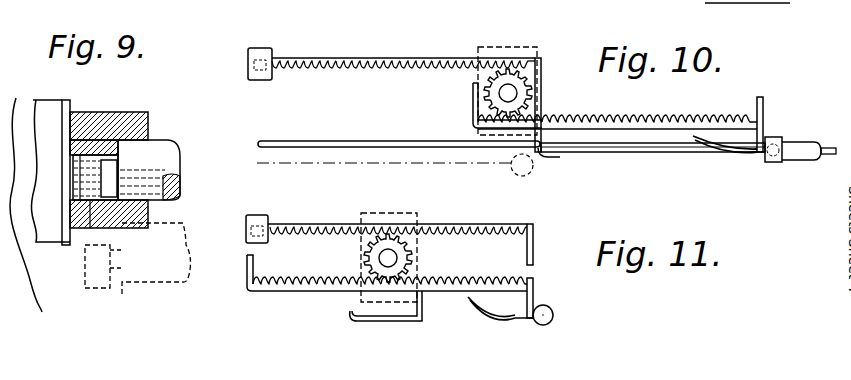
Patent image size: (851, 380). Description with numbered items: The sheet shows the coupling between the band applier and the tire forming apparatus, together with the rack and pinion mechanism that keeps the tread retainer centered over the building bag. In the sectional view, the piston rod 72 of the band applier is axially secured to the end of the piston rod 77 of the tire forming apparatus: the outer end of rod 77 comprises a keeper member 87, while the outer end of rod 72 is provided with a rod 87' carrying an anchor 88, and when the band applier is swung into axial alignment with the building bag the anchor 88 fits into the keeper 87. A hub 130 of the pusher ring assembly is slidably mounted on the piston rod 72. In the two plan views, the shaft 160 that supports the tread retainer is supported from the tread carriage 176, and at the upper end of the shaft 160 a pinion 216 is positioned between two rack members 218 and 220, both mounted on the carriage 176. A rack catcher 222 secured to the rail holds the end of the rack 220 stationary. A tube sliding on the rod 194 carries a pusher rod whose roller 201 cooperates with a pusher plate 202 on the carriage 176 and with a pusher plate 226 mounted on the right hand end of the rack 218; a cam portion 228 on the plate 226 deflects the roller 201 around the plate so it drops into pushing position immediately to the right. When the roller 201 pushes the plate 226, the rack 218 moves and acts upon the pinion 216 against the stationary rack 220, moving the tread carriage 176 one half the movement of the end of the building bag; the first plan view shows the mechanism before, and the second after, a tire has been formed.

In FIG. 9, the piston rod 72 is at (167, 156).
In FIG. 9, the piston rod 77 is at (73, 139).
In FIG. 9, the keeper member 87 is at (111, 120).
In FIG. 9, the rod 87' is at (133, 149).
In FIG. 9, the anchor 88 is at (88, 226).
In FIG. 9, the hub 130 is at (148, 118).
In FIG. 10, the shaft 160 is at (510, 93).
In FIG. 11, the shaft 160 is at (392, 258).
In FIG. 10, the tread carriage 176 is at (522, 50).
In FIG. 11, the tread carriage 176 is at (418, 213).
In FIG. 10, the rod 194 is at (637, 153).
In FIG. 10, the roller 201 is at (535, 148).
In FIG. 11, the roller 201 is at (554, 315).
In FIG. 10, the pusher plate 202 is at (548, 136).
In FIG. 11, the pusher plate 202 is at (423, 318).
In FIG. 10, the pinion 216 is at (480, 92).
In FIG. 11, the pinion 216 is at (364, 256).
In FIG. 10, the rack member 218 is at (708, 118).
In FIG. 11, the rack member 218 is at (308, 291).
In FIG. 10, the rack member 220 is at (397, 59).
In FIG. 11, the rack member 220 is at (318, 212).
In FIG. 10, the rack catcher 222 is at (263, 50).
In FIG. 11, the rack catcher 222 is at (257, 214).
In FIG. 10, the pusher plate 226 is at (770, 137).
In FIG. 11, the pusher plate 226 is at (531, 300).
In FIG. 10, the cam portion 228 is at (732, 152).
In FIG. 11, the cam portion 228 is at (495, 317).